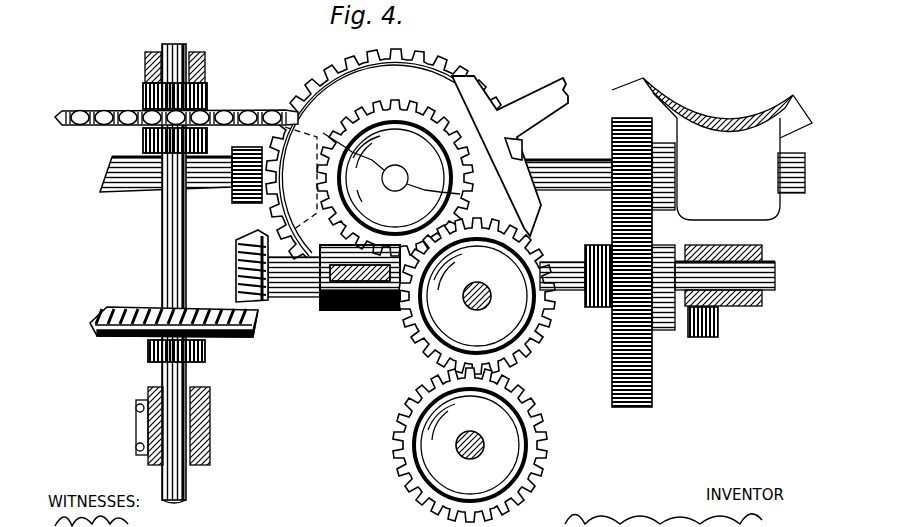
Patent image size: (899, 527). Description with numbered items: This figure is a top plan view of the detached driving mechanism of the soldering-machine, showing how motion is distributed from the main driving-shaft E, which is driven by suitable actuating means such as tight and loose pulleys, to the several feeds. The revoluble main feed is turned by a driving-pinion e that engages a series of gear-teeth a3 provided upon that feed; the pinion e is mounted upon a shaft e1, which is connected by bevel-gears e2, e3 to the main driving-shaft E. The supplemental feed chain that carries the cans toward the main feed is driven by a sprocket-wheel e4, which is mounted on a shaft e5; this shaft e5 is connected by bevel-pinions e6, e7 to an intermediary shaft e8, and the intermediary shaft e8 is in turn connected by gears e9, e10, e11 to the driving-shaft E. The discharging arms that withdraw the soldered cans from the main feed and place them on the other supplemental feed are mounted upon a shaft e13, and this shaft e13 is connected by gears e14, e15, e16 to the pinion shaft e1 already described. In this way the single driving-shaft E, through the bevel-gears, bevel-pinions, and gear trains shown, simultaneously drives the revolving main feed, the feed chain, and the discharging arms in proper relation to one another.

The main driving-shaft E is at (129, 196).
The driving-pinion e is at (389, 100).
The shaft e1 is at (393, 172).
The bevel-gear e2 is at (336, 84).
The bevel-gear e3 is at (268, 218).
The sprocket-wheel e4 is at (56, 118).
The shaft e5 is at (173, 47).
The bevel-pinion e6 is at (122, 308).
The bevel-pinion e7 is at (237, 283).
The intermediary shaft e8 is at (571, 267).
The gear e9 is at (612, 332).
The gear e10 is at (612, 398).
The gear e11 is at (614, 120).
The shaft e13 is at (478, 446).
The gear e14 is at (546, 452).
The gear e15 is at (526, 348).
The gear e16 is at (340, 230).
The gear-teeth a3 is at (440, 98).